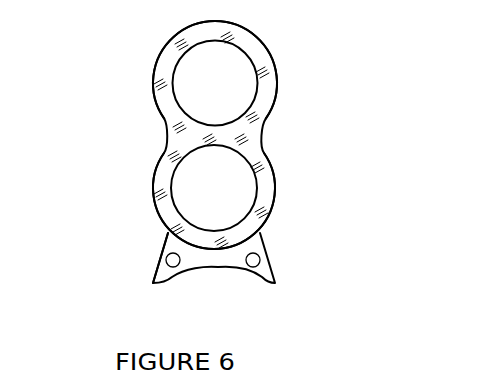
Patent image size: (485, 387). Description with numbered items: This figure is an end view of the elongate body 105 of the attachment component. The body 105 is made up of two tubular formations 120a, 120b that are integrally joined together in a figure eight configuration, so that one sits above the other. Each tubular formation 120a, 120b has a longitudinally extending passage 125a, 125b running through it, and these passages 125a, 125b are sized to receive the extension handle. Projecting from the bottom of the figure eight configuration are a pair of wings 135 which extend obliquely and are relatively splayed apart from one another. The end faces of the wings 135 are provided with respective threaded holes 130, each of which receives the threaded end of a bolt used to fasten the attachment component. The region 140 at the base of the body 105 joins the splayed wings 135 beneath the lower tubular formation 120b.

The elongate body 105 is at (108, 44).
The tubular formation 120a is at (270, 53).
The longitudinally extending passage 125a is at (257, 90).
The tubular formation 120b is at (275, 173).
The longitudinally extending passage 125b is at (256, 198).
The threaded hole 130 is at (176, 259).
The wing 135 is at (153, 282).
The base 140 is at (218, 268).